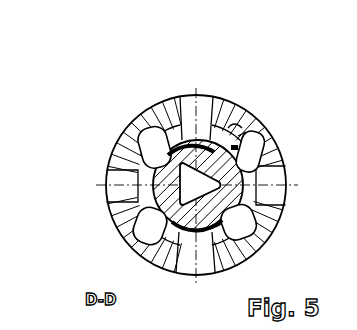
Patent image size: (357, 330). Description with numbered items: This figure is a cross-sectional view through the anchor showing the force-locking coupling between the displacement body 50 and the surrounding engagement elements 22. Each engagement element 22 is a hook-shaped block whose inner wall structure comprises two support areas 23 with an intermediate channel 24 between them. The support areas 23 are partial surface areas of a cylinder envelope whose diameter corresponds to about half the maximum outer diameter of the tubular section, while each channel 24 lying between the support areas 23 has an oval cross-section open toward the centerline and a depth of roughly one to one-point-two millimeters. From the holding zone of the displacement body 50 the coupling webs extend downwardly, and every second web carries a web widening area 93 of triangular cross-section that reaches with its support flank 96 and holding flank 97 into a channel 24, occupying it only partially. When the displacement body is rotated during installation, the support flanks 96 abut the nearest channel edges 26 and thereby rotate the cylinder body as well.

The engagement element 22 is at (133, 133).
The displacement body 50 is at (150, 170).
The channel edge 26 is at (213, 108).
The support flank 96 is at (236, 128).
The web widening area 93 is at (240, 135).
The holding flank 97 is at (238, 147).
The support area 23 is at (140, 207).
The channel 24 is at (150, 230).